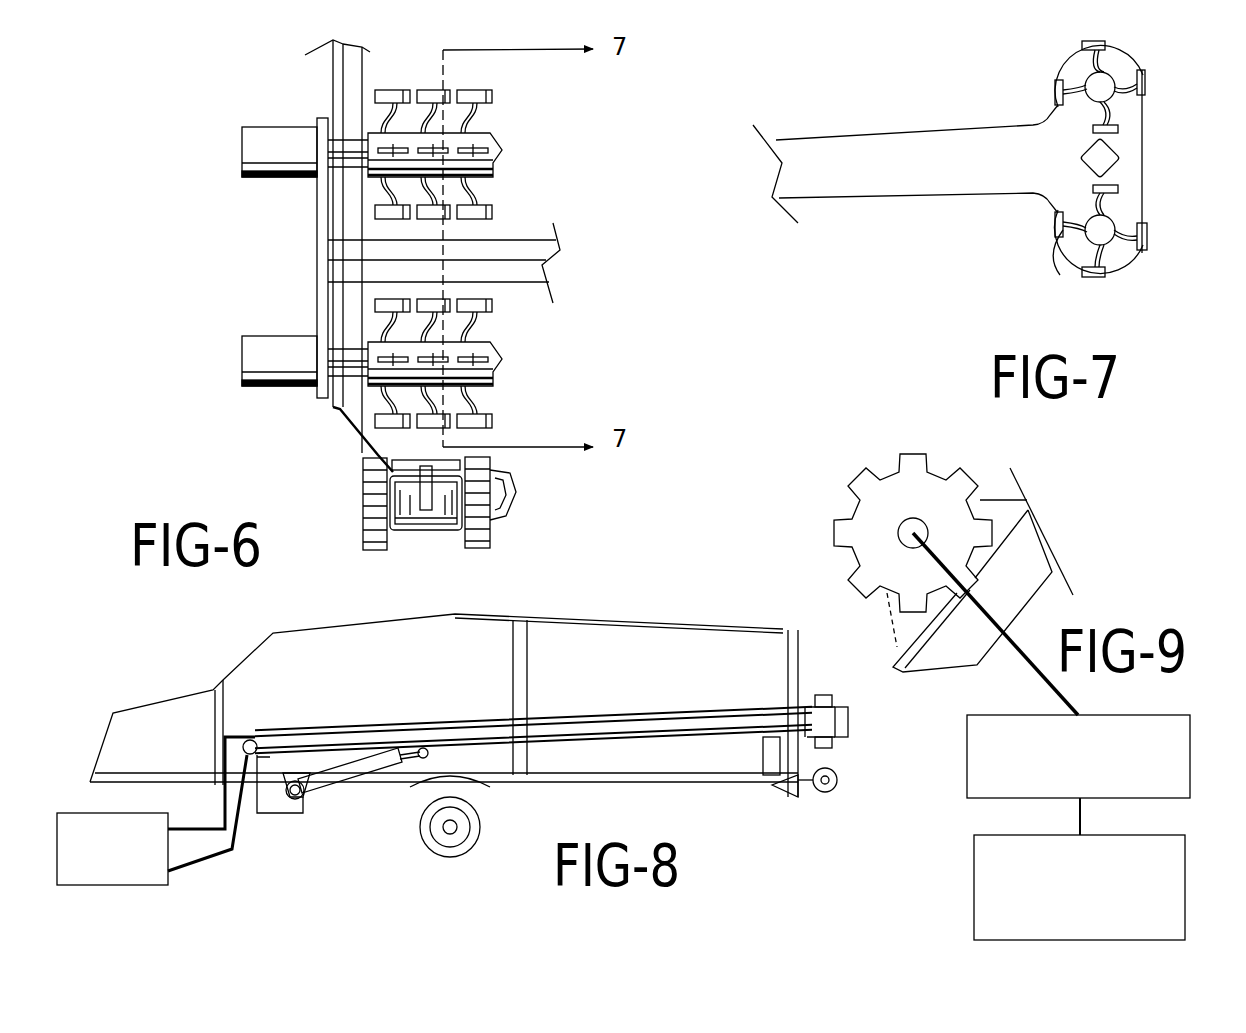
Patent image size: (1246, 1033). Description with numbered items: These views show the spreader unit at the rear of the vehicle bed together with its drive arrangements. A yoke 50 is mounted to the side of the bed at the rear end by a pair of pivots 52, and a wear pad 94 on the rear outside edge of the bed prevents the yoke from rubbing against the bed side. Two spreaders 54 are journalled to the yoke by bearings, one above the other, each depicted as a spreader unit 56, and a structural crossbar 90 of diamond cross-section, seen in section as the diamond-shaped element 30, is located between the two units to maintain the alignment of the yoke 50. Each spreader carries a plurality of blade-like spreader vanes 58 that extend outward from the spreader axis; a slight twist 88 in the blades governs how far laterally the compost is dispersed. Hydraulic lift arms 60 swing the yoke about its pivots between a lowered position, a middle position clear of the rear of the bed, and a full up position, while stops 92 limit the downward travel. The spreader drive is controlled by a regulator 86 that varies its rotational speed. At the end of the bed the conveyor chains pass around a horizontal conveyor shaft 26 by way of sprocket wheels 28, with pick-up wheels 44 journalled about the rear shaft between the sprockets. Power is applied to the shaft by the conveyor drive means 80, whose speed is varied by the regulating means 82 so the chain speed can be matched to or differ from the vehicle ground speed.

In FIG. 9, the conveyor shaft 26 is at (893, 523).
In FIG. 9, the sprocket wheel 28 is at (905, 455).
In FIG. 7, the diamond guide 30 is at (1083, 153).
In FIG. 6, the pick-up wheel 44 is at (377, 550).
In FIG. 6, the yoke 50 is at (317, 258).
In FIG. 7, the yoke 50 is at (860, 150).
In FIG. 8, the yoke 50 is at (683, 738).
In FIG. 8, the pivot 52 is at (247, 737).
In FIG. 7, the spreader 54 is at (1070, 240).
In FIG. 6, the tool unit 56 is at (492, 127).
In FIG. 7, the tool unit 56 is at (1052, 62).
In FIG. 7, the spreader vane 58 is at (1093, 277).
In FIG. 8, the hydraulic lift arm 60 is at (397, 777).
In FIG. 6, the conveyor drive means 80 is at (242, 132).
In FIG. 9, the regulating means 82 is at (974, 902).
In FIG. 8, the regulator 86 is at (122, 887).
In FIG. 7, the twist 88 is at (1123, 97).
In FIG. 6, the structural crossbar 90 is at (528, 250).
In FIG. 9, the structural crossbar 90 is at (967, 745).
In FIG. 8, the stop 92 is at (768, 770).
In FIG. 6, the wear pad 94 is at (333, 98).